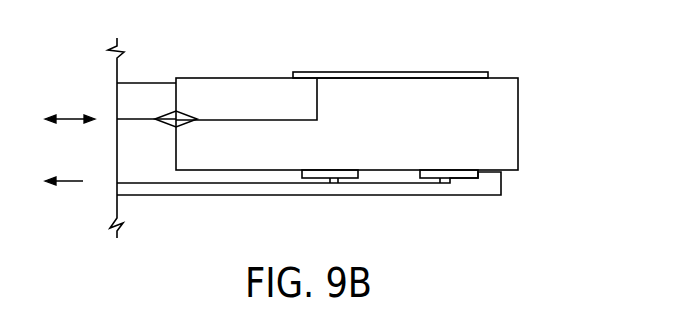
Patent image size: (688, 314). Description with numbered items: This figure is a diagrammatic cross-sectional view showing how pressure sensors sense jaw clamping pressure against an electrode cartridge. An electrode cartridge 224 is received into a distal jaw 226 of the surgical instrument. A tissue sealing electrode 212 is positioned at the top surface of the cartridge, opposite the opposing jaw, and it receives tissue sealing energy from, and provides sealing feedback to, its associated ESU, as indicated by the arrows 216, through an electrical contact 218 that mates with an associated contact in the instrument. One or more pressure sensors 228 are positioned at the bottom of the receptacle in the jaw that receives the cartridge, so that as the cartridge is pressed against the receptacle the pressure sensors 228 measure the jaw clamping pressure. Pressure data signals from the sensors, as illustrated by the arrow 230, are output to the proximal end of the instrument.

The tissue sealing electrode 212 is at (437, 72).
The arrows 216 is at (69, 118).
The electrical contact 218 is at (187, 114).
The electrode cartridge 224 is at (518, 159).
The distal jaw 226 is at (483, 196).
The pressure sensors 228 is at (334, 179).
The arrow 230 is at (80, 182).